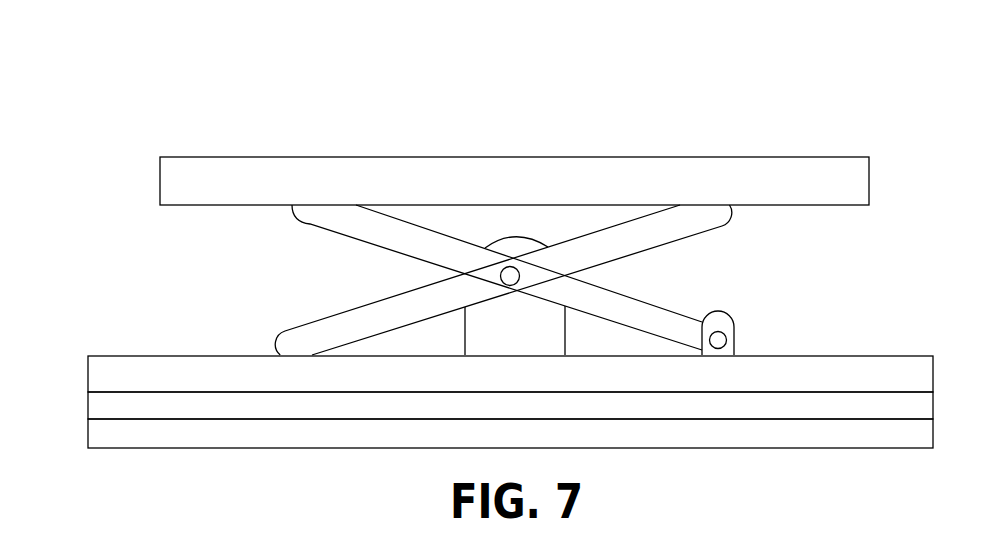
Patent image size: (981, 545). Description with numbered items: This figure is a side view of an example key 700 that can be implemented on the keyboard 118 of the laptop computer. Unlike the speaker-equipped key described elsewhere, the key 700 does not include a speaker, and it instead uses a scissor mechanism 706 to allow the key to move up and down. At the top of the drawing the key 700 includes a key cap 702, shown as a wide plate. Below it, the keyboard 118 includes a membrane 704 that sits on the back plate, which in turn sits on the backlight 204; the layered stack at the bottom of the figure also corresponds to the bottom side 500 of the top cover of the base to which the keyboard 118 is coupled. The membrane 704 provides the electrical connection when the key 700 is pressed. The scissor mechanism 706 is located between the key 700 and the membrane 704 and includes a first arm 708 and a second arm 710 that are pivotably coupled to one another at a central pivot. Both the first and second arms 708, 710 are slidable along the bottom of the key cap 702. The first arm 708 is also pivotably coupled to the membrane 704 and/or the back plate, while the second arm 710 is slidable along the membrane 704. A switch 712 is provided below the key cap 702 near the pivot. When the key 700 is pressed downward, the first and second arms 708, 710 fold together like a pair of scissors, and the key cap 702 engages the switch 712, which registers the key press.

The keyboard 118 is at (138, 73).
The key 700 is at (548, 114).
The key cap 702 is at (298, 170).
The membrane 704 is at (98, 376).
The bottom side 500 is at (98, 410).
The backlight 204 is at (98, 438).
The scissor mechanism 706 is at (262, 285).
The first arm 708 is at (322, 218).
The second arm 710 is at (318, 338).
The switch 712 is at (513, 252).